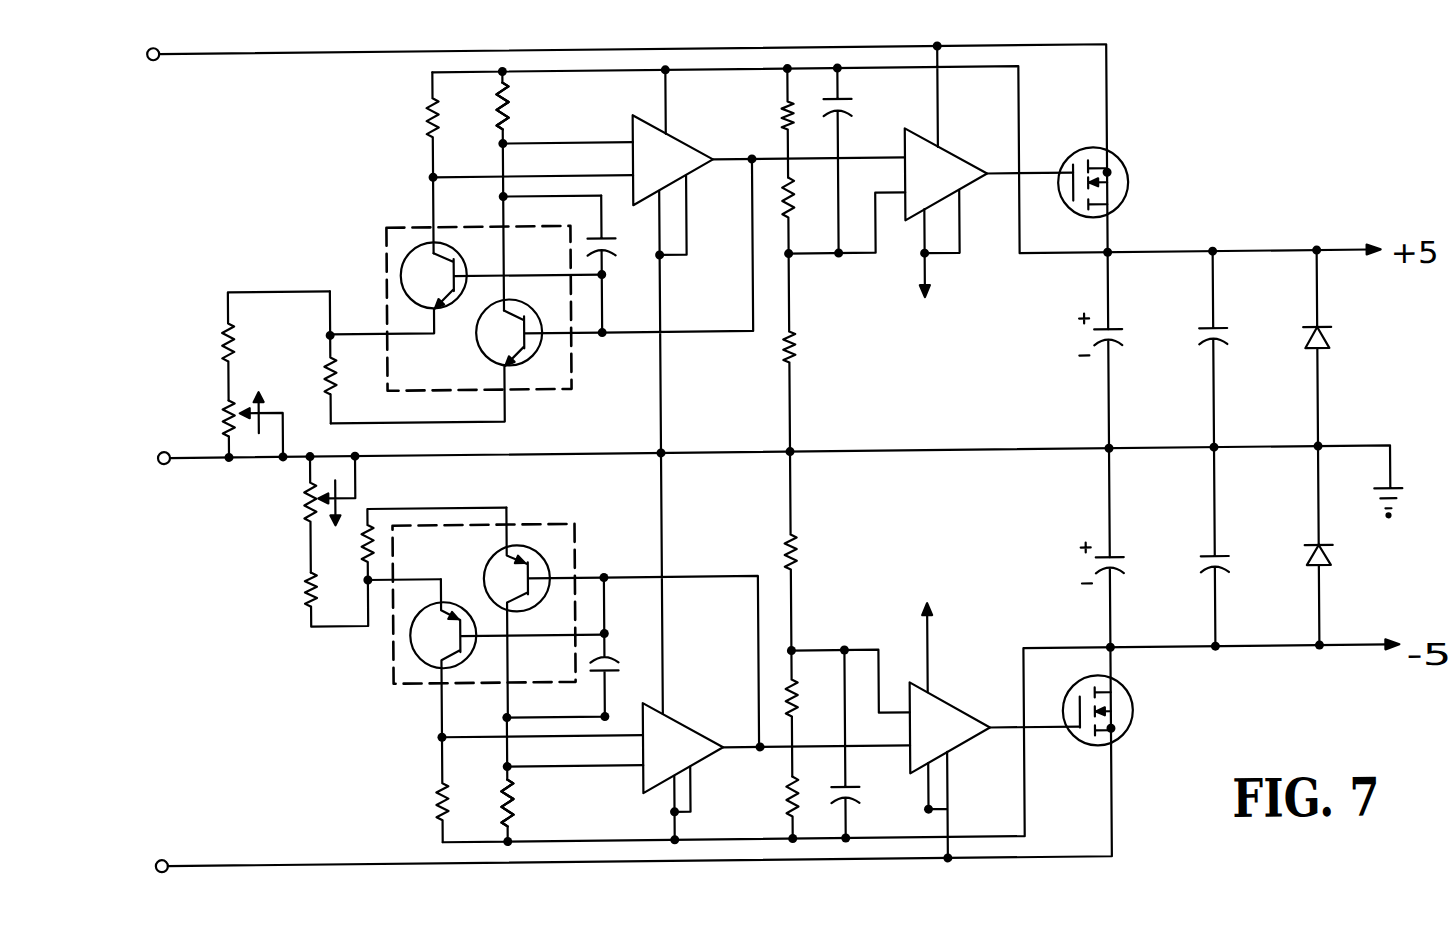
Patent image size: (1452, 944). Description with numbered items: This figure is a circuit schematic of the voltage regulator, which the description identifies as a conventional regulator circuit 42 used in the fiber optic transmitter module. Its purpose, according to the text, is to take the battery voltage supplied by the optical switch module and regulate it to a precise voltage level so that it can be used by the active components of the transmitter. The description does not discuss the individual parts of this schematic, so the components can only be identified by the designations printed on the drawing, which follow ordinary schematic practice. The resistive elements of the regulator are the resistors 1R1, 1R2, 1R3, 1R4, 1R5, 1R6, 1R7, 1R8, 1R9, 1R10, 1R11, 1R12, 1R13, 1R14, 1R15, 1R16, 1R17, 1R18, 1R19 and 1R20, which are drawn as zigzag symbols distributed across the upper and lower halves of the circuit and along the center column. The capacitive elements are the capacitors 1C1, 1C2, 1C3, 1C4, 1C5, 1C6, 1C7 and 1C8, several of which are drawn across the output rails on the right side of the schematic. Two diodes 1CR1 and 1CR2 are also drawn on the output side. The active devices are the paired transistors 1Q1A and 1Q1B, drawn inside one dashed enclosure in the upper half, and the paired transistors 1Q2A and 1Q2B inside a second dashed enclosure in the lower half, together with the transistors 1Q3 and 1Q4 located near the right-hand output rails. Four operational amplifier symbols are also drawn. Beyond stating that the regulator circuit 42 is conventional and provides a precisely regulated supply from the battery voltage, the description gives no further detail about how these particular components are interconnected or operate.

The resistor 1R1 is at (248, 346).
The potentiometer 1R2 is at (222, 425).
The resistor 1R3 is at (307, 357).
The potentiometer 1R4 is at (303, 514).
The resistor 1R5 is at (313, 599).
The resistor 1R6 is at (412, 546).
The resistor 1R7 is at (491, 162).
The resistor 1R8 is at (508, 787).
The resistor 1R9 is at (565, 190).
The resistor 1R10 is at (537, 106).
The resistor 1R11 is at (533, 114).
The resistor 1R12 is at (572, 778).
The resistor 1R13 is at (541, 803).
The resistor 1R14 is at (541, 810).
The resistor 1R15 is at (748, 124).
The resistor 1R16 is at (793, 209).
The resistor 1R17 is at (826, 352).
The resistor 1R18 is at (831, 551).
The resistor 1R19 is at (791, 701).
The resistor 1R20 is at (762, 808).
The capacitor 1C1 is at (616, 266).
The capacitor 1C2 is at (576, 649).
The electrolytic capacitor 1C3 is at (1119, 350).
The electrolytic capacitor 1C4 is at (1127, 579).
The capacitor 1C5 is at (1236, 349).
The capacitor 1C6 is at (1239, 546).
The capacitor 1C7 is at (865, 160).
The capacitor 1C8 is at (868, 743).
The diode 1CR1 is at (1355, 347).
The diode 1CR2 is at (1357, 545).
The transistor 1Q1A is at (403, 268).
The transistor 1Q1B is at (527, 360).
The transistor 1Q2A is at (412, 643).
The transistor 1Q2B is at (533, 531).
The MOSFET transistor 1Q3 is at (1117, 174).
The MOSFET transistor 1Q4 is at (1119, 704).
The regulator circuit 42 is at (1222, 167).